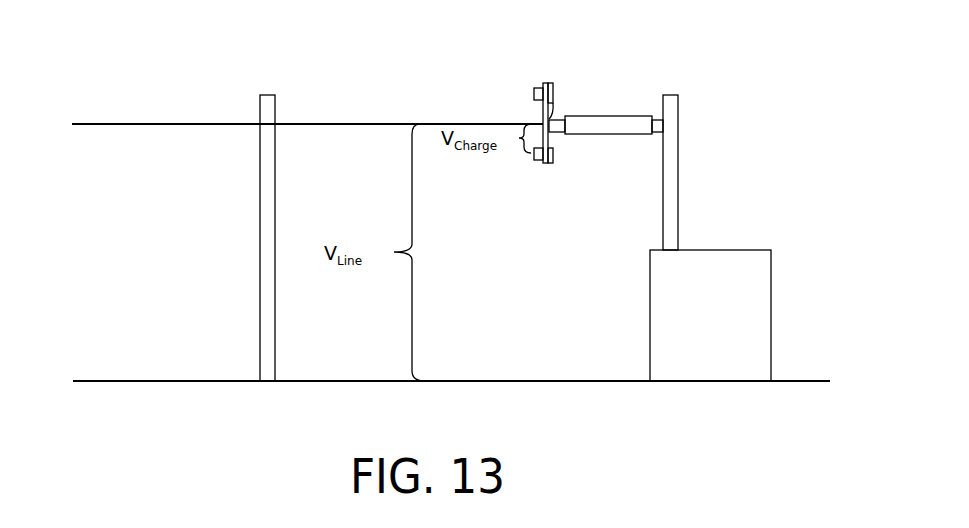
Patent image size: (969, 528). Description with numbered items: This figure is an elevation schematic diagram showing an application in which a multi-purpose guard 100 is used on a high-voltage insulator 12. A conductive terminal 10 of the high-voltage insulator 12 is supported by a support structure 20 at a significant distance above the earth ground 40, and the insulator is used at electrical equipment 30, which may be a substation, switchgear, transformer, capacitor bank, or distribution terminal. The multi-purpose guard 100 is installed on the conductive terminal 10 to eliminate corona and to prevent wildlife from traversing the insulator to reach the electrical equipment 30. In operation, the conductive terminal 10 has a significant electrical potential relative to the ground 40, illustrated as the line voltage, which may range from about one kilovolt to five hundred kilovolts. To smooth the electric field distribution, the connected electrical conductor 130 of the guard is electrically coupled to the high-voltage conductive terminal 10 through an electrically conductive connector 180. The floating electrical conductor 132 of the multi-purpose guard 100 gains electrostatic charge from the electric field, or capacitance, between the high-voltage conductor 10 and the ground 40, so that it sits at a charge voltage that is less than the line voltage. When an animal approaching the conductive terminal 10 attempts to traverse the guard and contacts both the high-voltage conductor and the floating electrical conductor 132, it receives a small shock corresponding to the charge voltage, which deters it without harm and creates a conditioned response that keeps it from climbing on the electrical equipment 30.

The conductive terminal 10 is at (562, 132).
The high-voltage insulator 12 is at (632, 123).
The support structure 20 is at (275, 109).
The electrical equipment 30 is at (650, 307).
The ground 40 is at (470, 379).
The multi-purpose guard 100 is at (550, 82).
The connected electrical conductor 130 is at (555, 165).
The floating electrical conductor 132 is at (534, 158).
The electrically conductive connector 180 is at (555, 108).